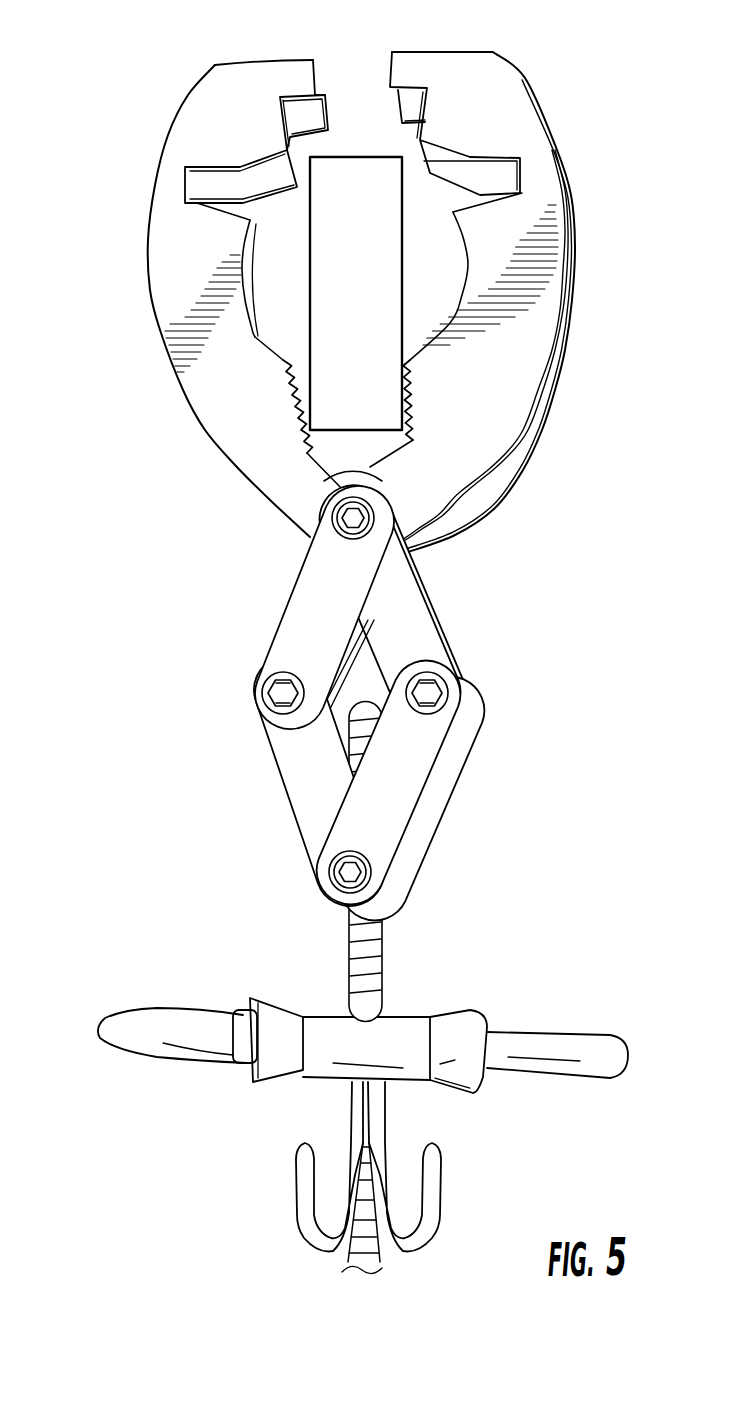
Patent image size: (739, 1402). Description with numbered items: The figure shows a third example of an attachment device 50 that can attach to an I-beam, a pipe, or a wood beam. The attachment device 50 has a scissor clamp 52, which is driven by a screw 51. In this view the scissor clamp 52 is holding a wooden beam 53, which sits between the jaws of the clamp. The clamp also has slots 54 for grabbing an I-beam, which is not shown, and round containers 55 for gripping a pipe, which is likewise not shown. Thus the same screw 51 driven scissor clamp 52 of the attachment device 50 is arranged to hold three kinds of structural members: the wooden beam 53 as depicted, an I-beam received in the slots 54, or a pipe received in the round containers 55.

The attachment device 50 is at (193, 578).
The screw 51 is at (290, 930).
The scissor clamp 52 is at (237, 412).
The wooden beam 53 is at (341, 268).
The slots 54 is at (253, 221).
The round containers 55 is at (257, 335).